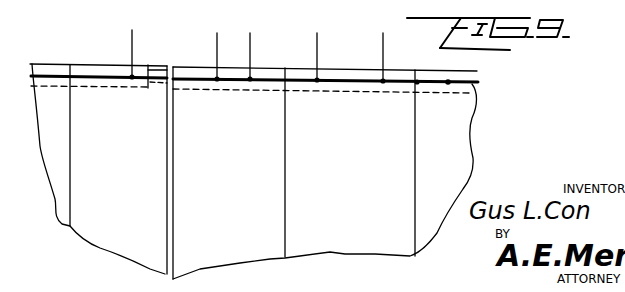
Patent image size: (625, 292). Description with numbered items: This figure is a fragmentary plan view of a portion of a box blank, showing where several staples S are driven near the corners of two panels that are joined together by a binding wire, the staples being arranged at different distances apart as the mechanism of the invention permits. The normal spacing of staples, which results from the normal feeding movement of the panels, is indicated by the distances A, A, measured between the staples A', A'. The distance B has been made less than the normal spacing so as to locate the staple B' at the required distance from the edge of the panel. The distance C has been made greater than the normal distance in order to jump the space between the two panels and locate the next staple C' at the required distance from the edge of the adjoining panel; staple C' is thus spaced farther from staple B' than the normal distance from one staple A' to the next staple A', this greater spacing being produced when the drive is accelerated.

The normal staple spacing distance A is at (316, 43).
The reduced staple spacing distance B is at (233, 43).
The increased staple spacing distance C is at (174, 42).
The staple at normal spacing A' is at (321, 103).
The staple at reduced spacing B' is at (211, 99).
The staple at increased spacing C' is at (122, 97).
The staples S is at (448, 82).